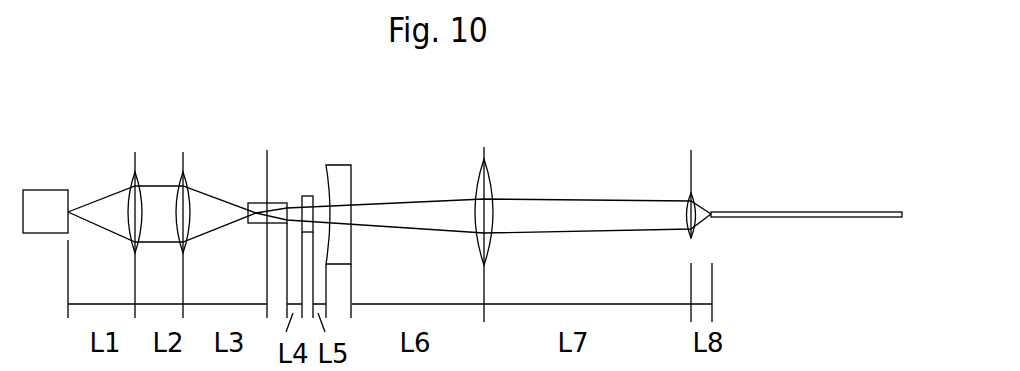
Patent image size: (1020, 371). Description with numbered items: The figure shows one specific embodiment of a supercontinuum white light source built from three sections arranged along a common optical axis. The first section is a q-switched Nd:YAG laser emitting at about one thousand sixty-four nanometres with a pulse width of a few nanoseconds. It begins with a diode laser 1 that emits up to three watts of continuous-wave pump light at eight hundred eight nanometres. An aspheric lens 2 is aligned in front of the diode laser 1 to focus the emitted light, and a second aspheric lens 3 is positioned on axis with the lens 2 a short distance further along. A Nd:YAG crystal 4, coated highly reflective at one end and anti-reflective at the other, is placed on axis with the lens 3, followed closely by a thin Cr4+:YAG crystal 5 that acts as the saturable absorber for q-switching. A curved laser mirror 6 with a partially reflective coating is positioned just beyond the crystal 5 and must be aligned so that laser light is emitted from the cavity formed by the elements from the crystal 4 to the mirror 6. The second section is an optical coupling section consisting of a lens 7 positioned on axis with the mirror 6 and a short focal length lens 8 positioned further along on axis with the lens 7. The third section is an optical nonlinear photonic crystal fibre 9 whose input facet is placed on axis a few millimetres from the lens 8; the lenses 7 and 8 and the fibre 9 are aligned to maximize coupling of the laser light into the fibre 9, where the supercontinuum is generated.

The diode laser 1 is at (55, 190).
The aspheric lens 2 is at (136, 214).
The second aspheric lens 3 is at (184, 214).
The Nd:YAG crystal 4 is at (267, 214).
The Cr4+:YAG crystal 5 is at (307, 196).
The laser mirror 6 is at (339, 167).
The lens 7 is at (487, 216).
The lens 8 is at (695, 216).
The optical nonlinear photonic crystal fibre 9 is at (740, 212).